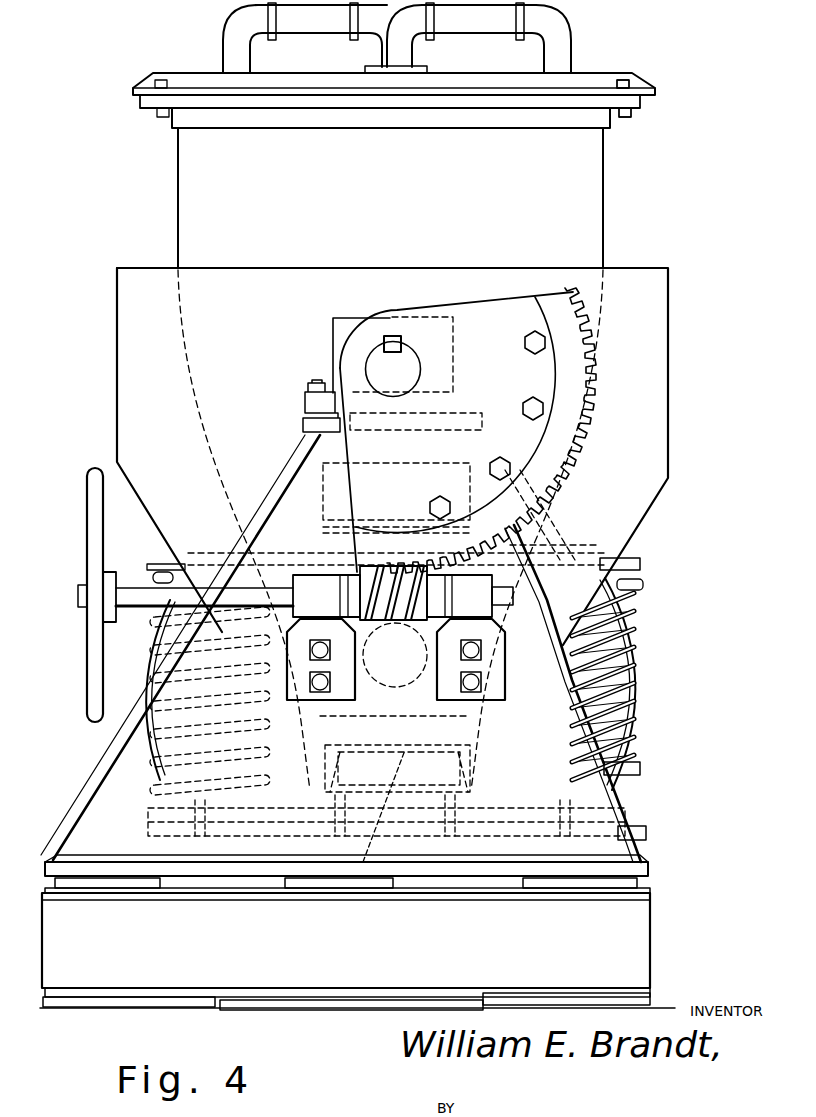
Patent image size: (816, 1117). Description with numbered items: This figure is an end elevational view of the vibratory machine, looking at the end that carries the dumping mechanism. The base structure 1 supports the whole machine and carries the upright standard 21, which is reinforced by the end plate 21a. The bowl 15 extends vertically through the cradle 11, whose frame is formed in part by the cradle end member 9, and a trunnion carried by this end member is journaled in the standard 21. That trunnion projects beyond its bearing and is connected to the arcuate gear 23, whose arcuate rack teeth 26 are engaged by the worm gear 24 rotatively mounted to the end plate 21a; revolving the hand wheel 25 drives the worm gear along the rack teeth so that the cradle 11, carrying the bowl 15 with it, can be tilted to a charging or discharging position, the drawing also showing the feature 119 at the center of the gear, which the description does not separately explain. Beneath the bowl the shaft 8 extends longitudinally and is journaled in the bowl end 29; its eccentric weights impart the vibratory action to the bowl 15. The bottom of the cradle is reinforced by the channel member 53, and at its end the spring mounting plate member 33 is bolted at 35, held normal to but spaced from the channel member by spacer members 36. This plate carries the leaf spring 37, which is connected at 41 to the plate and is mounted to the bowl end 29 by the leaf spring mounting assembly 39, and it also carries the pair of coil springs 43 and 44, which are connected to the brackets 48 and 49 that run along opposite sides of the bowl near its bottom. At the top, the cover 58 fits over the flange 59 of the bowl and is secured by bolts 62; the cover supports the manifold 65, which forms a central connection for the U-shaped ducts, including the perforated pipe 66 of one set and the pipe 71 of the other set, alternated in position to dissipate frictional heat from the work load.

The base structure 1 is at (610, 943).
The shaft 8 is at (372, 686).
The cradle end member 9 is at (648, 412).
The cradle 11 is at (689, 340).
The bowl 15 is at (629, 213).
The upright standard 21 is at (338, 346).
The end plate 21a is at (108, 800).
The arcuate gear 23 is at (535, 378).
The worm gear 24 is at (400, 565).
The hand wheel 25 is at (97, 664).
The arcuate rack teeth 26 is at (566, 486).
The bowl end 29 is at (200, 222).
The spring mounting plate member 33 is at (646, 833).
The bolts 35 is at (446, 742).
The spacer members 36 is at (333, 797).
The leaf spring 37 is at (147, 638).
The leaf spring mounting assembly 39 is at (286, 492).
The leaf spring connection 41 is at (432, 806).
The coil spring 43 is at (642, 770).
The coil spring 44 is at (148, 792).
The bracket 48 is at (640, 564).
The bracket 49 is at (157, 563).
The channel member 53 is at (363, 862).
The cover 58 is at (262, 88).
The flange 59 is at (198, 120).
The bolts 62 is at (636, 84).
The manifold 65 is at (426, 70).
The U-shaped pipe 66 is at (563, 56).
The pipe 71 is at (236, 31).
The shaft hole 119 is at (418, 371).